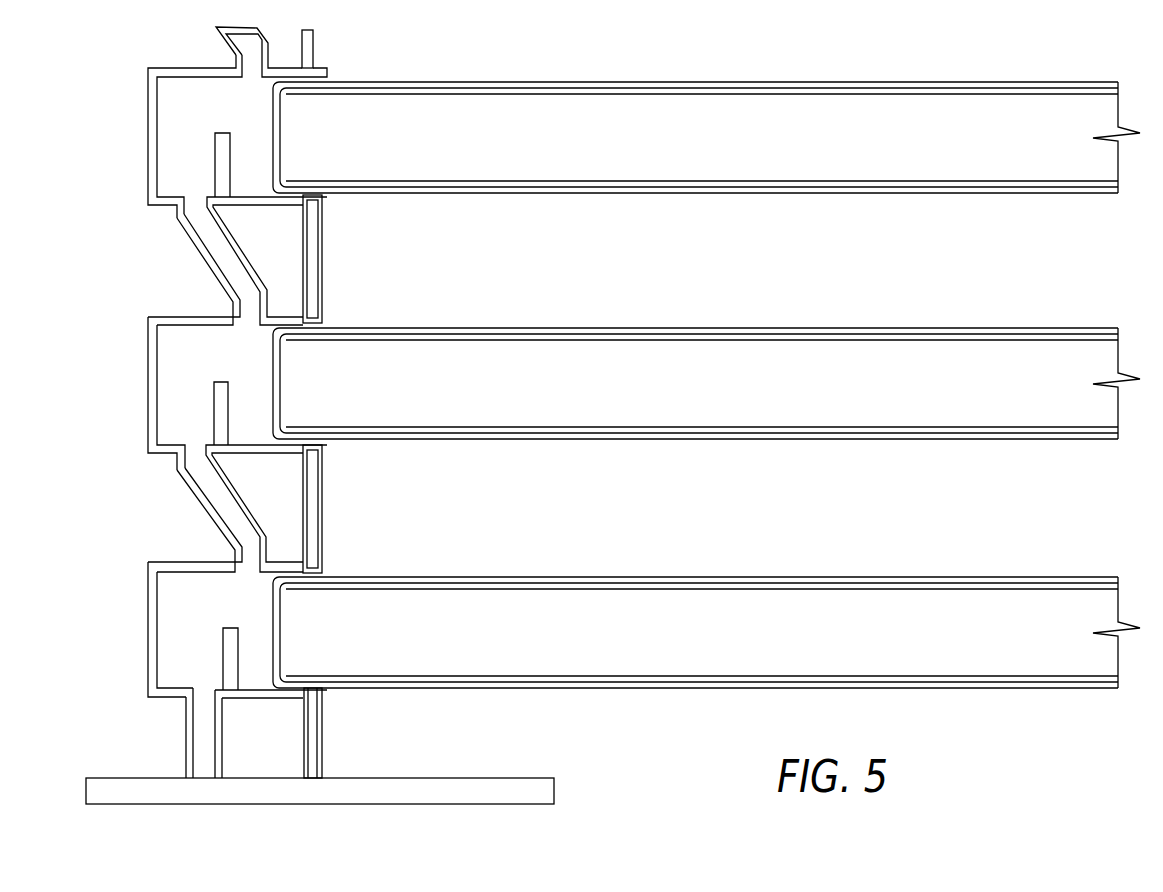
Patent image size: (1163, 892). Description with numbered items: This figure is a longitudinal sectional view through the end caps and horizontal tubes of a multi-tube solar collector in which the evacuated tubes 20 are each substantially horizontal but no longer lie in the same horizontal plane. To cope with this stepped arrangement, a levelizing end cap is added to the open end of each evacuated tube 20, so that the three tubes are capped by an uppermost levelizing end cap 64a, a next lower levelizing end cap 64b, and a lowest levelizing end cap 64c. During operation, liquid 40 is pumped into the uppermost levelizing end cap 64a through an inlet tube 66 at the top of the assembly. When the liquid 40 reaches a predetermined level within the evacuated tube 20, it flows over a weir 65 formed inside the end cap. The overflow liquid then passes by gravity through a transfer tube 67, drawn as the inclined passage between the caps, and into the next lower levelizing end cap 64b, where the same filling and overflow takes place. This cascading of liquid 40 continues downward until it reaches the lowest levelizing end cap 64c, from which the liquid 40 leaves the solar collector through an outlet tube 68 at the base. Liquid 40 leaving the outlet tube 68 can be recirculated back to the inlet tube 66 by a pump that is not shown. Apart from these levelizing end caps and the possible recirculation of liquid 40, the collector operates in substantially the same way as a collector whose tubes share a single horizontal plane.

The evacuated tube 20 is at (675, 81).
The liquid 40 is at (170, 172).
The uppermost levelizing end cap 64a is at (150, 97).
The next lower levelizing end cap 64b is at (148, 374).
The lowest levelizing end cap 64c is at (148, 612).
The weir 65 is at (213, 145).
The inlet tube 66 is at (232, 53).
The transfer tube 67 is at (205, 257).
The outlet tube 68 is at (188, 750).